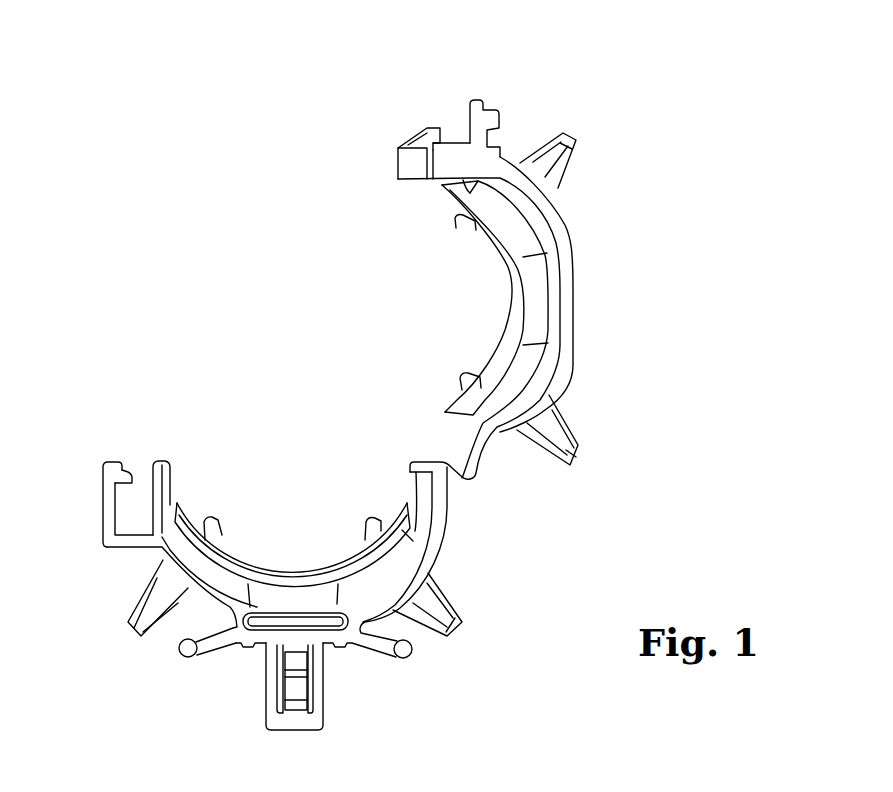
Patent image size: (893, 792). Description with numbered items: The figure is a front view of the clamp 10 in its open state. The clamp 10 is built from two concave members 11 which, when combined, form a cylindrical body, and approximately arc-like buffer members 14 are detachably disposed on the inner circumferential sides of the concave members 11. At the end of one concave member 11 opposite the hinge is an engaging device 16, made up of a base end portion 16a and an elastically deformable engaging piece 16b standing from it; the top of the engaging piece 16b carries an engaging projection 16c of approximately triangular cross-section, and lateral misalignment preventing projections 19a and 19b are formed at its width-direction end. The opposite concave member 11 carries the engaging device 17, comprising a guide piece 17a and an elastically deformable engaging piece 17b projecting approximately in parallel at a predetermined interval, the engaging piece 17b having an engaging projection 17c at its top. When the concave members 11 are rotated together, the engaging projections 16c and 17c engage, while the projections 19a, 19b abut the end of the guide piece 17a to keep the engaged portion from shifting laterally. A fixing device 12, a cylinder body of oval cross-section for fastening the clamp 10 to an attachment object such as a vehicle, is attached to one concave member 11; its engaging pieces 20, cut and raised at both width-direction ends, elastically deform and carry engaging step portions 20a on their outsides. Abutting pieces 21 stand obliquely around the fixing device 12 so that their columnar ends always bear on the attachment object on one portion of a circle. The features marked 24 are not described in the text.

The clamp 10 is at (252, 114).
The concave member 11 is at (563, 282).
The fixing device 12 is at (320, 703).
The buffer member 14 is at (513, 333).
The engaging device 16 is at (383, 92).
The base end portion 16a is at (485, 105).
The engaging piece 16b is at (433, 152).
The engaging projection 16c is at (413, 143).
The engaging device 17 is at (147, 407).
The guide piece 17a is at (163, 470).
The engaging piece 17b is at (107, 502).
The engaging projection 17c is at (124, 477).
The lateral misalignment preventing projection 19a is at (414, 170).
The lateral misalignment preventing projection 19b is at (454, 152).
The engaging piece 20 is at (290, 687).
The engaging step portion 20a is at (297, 663).
The abutting piece 21 is at (179, 655).
The protruding rib 24 is at (574, 142).